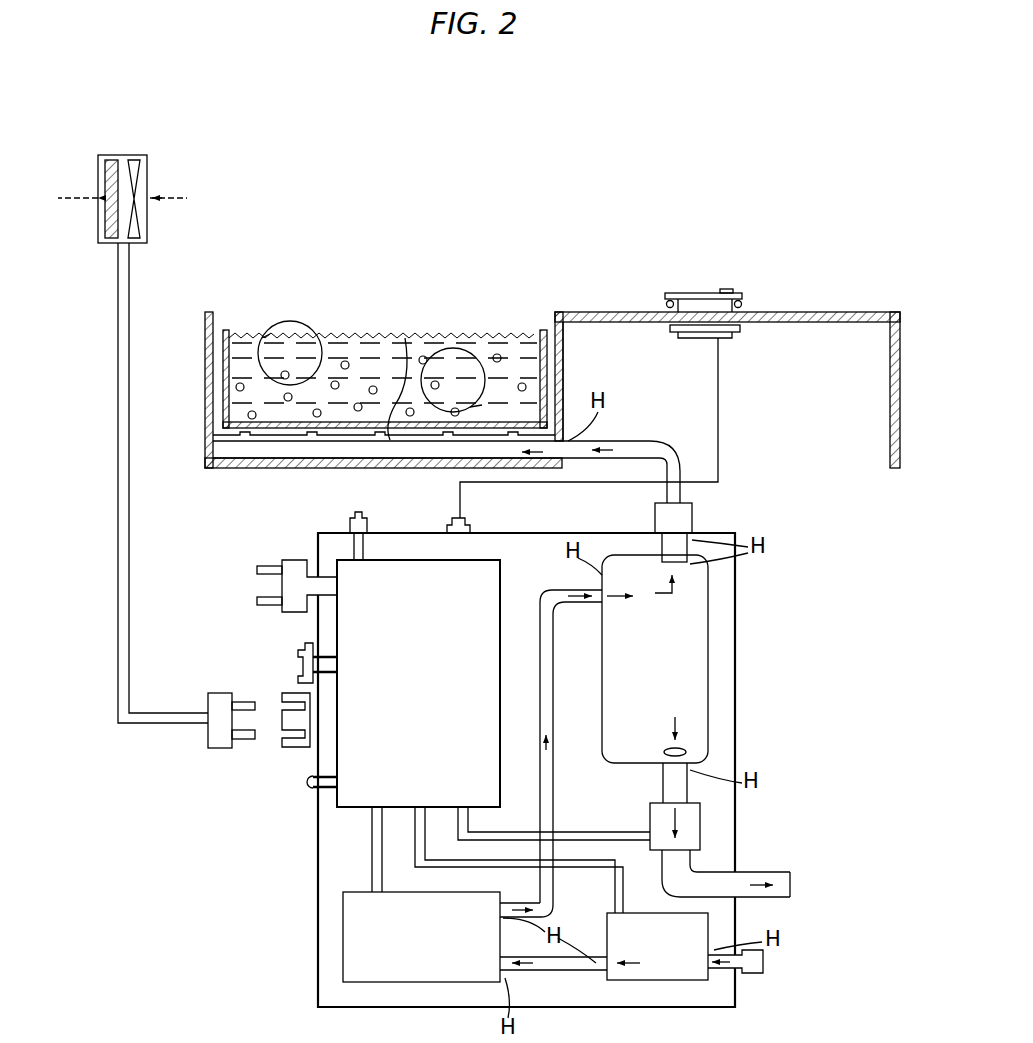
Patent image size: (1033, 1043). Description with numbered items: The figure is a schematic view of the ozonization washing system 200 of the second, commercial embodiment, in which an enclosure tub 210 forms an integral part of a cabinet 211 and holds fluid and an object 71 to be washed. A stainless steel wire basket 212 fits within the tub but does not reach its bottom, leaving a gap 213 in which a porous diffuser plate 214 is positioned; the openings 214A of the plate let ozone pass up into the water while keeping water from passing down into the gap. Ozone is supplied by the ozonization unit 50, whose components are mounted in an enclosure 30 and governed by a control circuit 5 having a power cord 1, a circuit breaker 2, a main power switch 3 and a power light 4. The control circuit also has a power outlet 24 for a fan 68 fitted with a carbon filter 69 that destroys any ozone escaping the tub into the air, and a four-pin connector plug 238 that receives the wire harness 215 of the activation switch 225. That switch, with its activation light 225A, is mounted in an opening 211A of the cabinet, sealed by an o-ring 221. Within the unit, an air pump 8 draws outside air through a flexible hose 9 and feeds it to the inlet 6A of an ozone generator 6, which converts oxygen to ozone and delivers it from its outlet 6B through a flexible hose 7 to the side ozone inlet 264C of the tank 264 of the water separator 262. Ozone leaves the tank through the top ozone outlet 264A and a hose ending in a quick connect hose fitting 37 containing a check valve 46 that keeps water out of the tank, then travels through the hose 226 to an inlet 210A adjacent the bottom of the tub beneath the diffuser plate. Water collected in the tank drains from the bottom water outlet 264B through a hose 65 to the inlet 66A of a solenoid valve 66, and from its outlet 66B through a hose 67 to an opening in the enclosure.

The power cord 1 is at (285, 560).
The circuit breaker 2 is at (350, 520).
The main power switch 3 is at (300, 660).
The power light 4 is at (307, 782).
The control circuit 5 is at (334, 797).
The ozone generator 6 is at (343, 912).
The inlet of ozone generator 6A is at (500, 974).
The outlet of ozone generator 6B is at (512, 903).
The flexible hose 7 is at (540, 598).
The air pump 8 is at (620, 982).
The flexible hose 9 is at (745, 973).
The power outlet 24 is at (283, 697).
The enclosure 30 is at (318, 964).
The quick connect hose fitting 37 is at (692, 518).
The check valve 46 is at (680, 506).
The ozonization unit 50 is at (256, 945).
The hose 65 is at (661, 773).
The solenoid valve 66 is at (700, 816).
The inlet of solenoid valve 66A is at (658, 803).
The outlet of solenoid valve 66B is at (700, 858).
The hose 67 is at (776, 872).
The fan 68 is at (135, 160).
The carbon filter 69 is at (110, 160).
The object 71 is at (268, 332).
The ozonization washing system 200 is at (272, 112).
The enclosure tub 210 is at (210, 312).
The inlet 210A is at (571, 461).
The cabinet 211 is at (806, 312).
The opening 211A is at (731, 334).
The wire basket 212 is at (226, 330).
The gap 213 is at (313, 450).
The diffuser plate 214 is at (222, 437).
The openings 214A is at (402, 338).
The wire harness 215 is at (719, 420).
The o-ring 221 is at (666, 302).
The activation switch 225 is at (695, 293).
The activation light 225A is at (727, 289).
The hose 226 is at (661, 441).
The connector plug 238 is at (450, 520).
The water separator 262 is at (728, 708).
The tank 264 is at (709, 637).
The top ozone outlet 264A is at (690, 566).
The bottom water outlet 264B is at (690, 754).
The side ozone inlet 264C is at (602, 618).